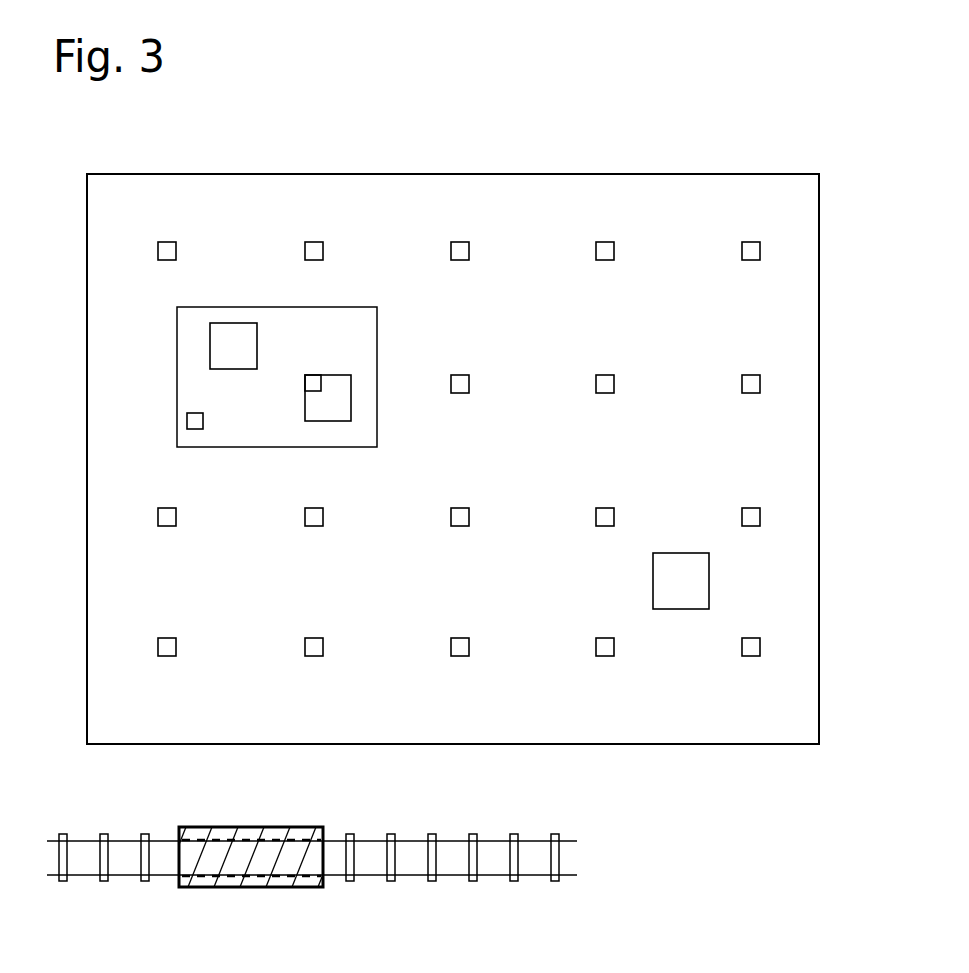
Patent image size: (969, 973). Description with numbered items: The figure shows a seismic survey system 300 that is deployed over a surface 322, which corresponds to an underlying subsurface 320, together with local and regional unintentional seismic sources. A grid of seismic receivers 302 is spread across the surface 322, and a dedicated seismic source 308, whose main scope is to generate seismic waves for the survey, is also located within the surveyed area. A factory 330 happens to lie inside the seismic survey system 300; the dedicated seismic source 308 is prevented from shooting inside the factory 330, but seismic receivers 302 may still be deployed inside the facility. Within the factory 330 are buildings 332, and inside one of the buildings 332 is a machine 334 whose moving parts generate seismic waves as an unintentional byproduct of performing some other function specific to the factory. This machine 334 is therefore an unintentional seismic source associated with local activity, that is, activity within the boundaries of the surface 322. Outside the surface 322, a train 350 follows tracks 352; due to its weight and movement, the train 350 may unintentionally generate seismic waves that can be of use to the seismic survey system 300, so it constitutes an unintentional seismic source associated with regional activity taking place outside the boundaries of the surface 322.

The seismic survey system 300 is at (487, 118).
The seismic receivers 302 is at (603, 375).
The dedicated seismic source 308 is at (672, 553).
The subsurface 320 is at (408, 598).
The surface 322 is at (720, 174).
The factory 330 is at (337, 307).
The buildings 332 is at (233, 339).
The machine (unintentional seismic source) 334 is at (312, 378).
The train 350 is at (260, 887).
The tracks 352 is at (485, 876).